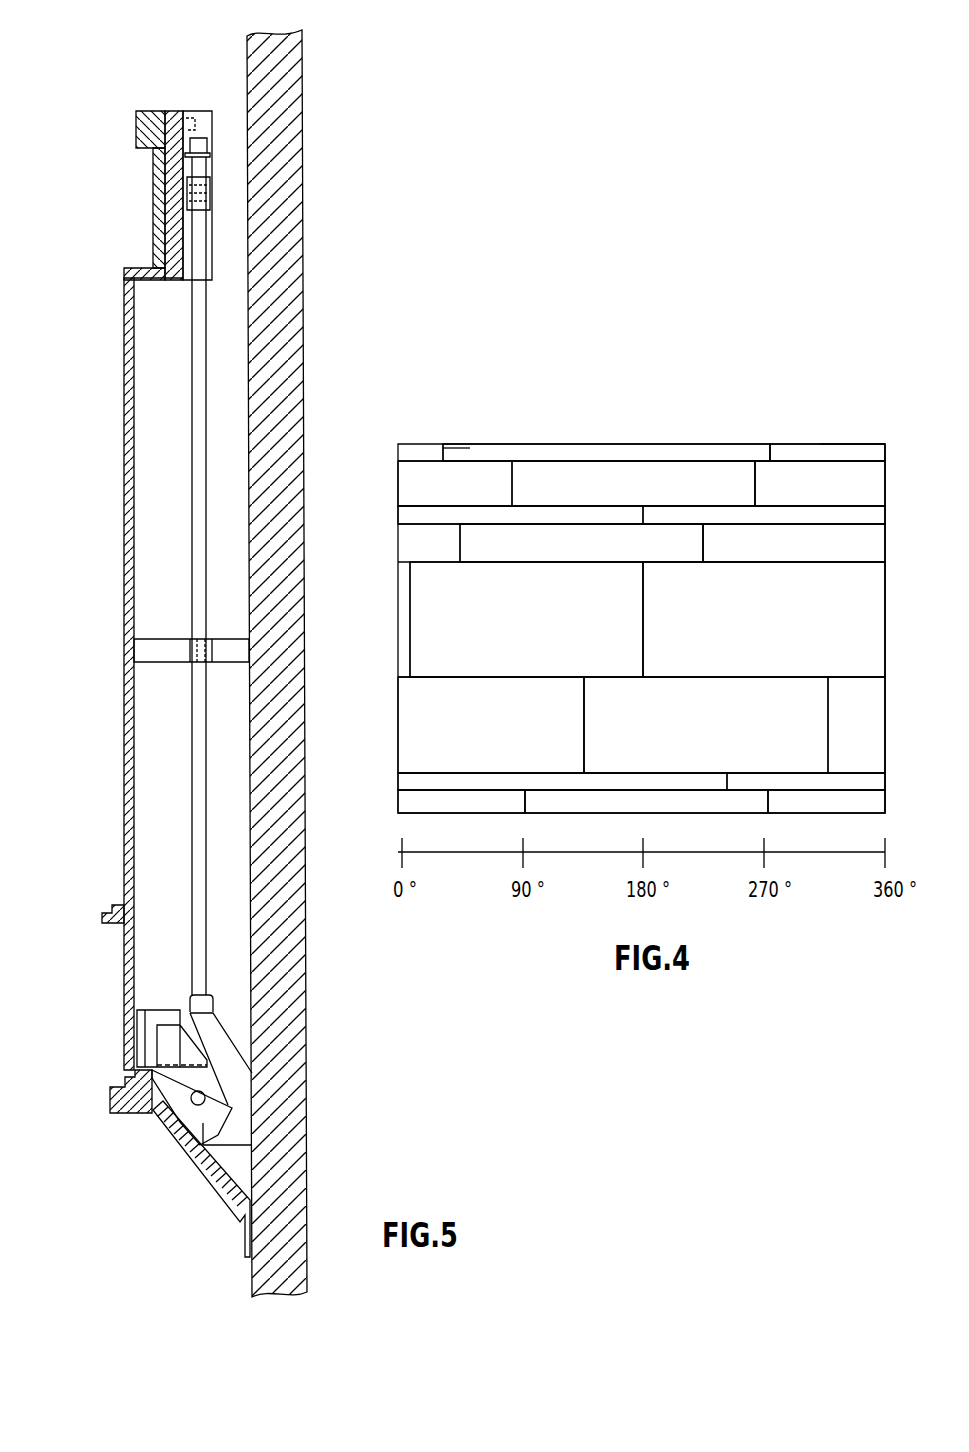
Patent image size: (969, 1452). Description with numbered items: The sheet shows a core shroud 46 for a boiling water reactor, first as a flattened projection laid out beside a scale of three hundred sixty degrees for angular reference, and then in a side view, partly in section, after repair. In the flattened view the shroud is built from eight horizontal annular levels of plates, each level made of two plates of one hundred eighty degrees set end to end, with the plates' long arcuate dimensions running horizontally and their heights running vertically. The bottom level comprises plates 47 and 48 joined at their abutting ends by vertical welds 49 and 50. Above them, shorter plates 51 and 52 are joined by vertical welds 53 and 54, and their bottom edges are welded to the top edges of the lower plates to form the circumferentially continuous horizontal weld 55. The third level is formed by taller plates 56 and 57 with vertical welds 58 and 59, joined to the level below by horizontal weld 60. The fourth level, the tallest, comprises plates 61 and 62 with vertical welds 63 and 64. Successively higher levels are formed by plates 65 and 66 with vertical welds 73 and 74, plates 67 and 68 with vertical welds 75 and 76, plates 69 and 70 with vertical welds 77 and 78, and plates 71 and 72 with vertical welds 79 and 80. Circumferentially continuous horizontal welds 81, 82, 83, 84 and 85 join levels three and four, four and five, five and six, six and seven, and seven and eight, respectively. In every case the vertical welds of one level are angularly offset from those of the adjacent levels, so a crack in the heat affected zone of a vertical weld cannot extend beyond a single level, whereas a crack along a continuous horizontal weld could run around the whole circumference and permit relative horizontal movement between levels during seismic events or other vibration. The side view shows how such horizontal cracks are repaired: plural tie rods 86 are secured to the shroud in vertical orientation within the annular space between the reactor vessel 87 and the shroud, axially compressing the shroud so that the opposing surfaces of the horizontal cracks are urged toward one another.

In FIG. 4, the core shroud 46 is at (396, 442).
In FIG. 5, the core shroud 46 is at (122, 388).
In FIG. 4, the plate 47 is at (480, 808).
In FIG. 4, the plate 48 is at (724, 808).
In FIG. 4, the vertical weld 49 is at (525, 797).
In FIG. 4, the vertical weld 50 is at (768, 797).
In FIG. 4, the plate 51 is at (581, 793).
In FIG. 4, the plate 52 is at (835, 797).
In FIG. 4, the vertical weld 53 is at (398, 783).
In FIG. 4, the vertical weld 54 is at (727, 782).
In FIG. 4, the horizontal weld 55 is at (885, 785).
In FIG. 5, the horizontal weld 55 is at (124, 935).
In FIG. 4, the plate 56 is at (437, 739).
In FIG. 4, the plate 57 is at (652, 730).
In FIG. 4, the vertical weld 58 is at (584, 718).
In FIG. 4, the vertical weld 59 is at (828, 735).
In FIG. 4, the horizontal weld 60 is at (885, 757).
In FIG. 5, the horizontal weld 60 is at (112, 908).
In FIG. 4, the plate 61 is at (515, 634).
In FIG. 4, the plate 62 is at (758, 640).
In FIG. 4, the vertical weld 63 is at (410, 622).
In FIG. 4, the vertical weld 64 is at (643, 627).
In FIG. 4, the plate 65 is at (540, 556).
In FIG. 4, the plate 66 is at (764, 556).
In FIG. 4, the plate 67 is at (417, 518).
In FIG. 4, the plate 68 is at (827, 422).
In FIG. 4, the plate 69 is at (569, 496).
In FIG. 4, the plate 70 is at (804, 496).
In FIG. 4, the plate 71 is at (607, 448).
In FIG. 4, the plate 72 is at (822, 449).
In FIG. 4, the vertical weld 73 is at (460, 545).
In FIG. 4, the vertical weld 74 is at (703, 545).
In FIG. 4, the vertical weld 75 is at (398, 512).
In FIG. 4, the vertical weld 76 is at (650, 512).
In FIG. 4, the vertical weld 77 is at (512, 480).
In FIG. 4, the vertical weld 78 is at (755, 485).
In FIG. 4, the vertical weld 79 is at (443, 448).
In FIG. 4, the vertical weld 80 is at (770, 452).
In FIG. 4, the horizontal weld 81 is at (885, 668).
In FIG. 5, the horizontal weld 81 is at (124, 738).
In FIG. 4, the horizontal weld 82 is at (885, 555).
In FIG. 5, the horizontal weld 82 is at (124, 487).
In FIG. 4, the horizontal weld 83 is at (885, 515).
In FIG. 5, the horizontal weld 83 is at (124, 280).
In FIG. 4, the horizontal weld 84 is at (885, 498).
In FIG. 5, the horizontal weld 84 is at (160, 267).
In FIG. 4, the horizontal weld 85 is at (885, 447).
In FIG. 5, the horizontal weld 85 is at (160, 152).
In FIG. 5, the tie rod 86 is at (193, 613).
In FIG. 5, the reactor vessel 87 is at (303, 200).